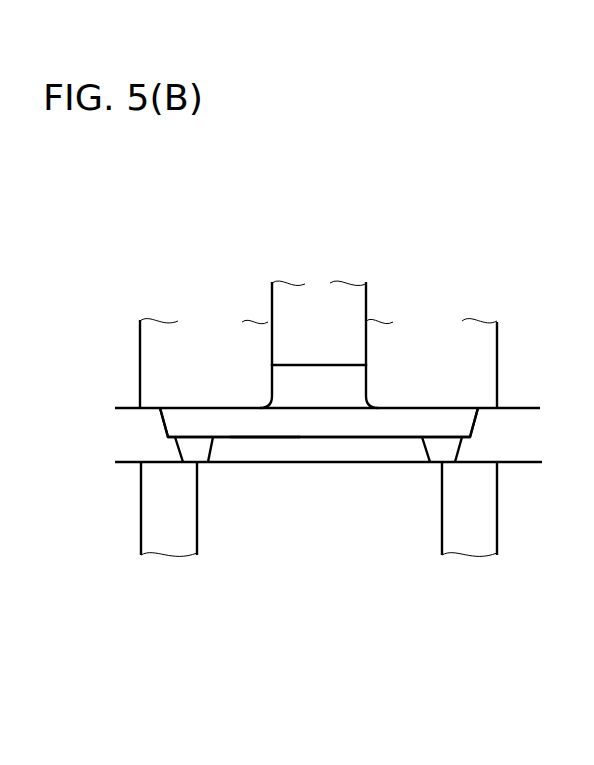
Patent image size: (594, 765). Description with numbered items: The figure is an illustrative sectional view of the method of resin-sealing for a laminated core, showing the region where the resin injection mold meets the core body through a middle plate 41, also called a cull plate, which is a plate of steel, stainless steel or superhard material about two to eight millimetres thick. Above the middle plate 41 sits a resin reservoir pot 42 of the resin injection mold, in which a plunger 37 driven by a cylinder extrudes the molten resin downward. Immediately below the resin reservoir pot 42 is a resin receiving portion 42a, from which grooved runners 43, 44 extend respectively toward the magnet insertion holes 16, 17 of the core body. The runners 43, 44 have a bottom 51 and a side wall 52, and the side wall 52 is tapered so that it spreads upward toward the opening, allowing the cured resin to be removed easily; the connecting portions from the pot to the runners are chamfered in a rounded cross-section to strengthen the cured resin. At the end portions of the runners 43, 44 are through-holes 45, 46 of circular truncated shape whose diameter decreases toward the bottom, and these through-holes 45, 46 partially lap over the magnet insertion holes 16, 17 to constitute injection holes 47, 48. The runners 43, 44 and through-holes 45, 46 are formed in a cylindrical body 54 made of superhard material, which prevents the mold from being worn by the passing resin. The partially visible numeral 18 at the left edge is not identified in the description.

The magnet insertion hole 16 is at (153, 512).
The magnet insertion hole 17 is at (477, 512).
The connecting portion 18 is at (2, 376).
The plunger 37 is at (342, 312).
The middle plate 41 is at (508, 432).
The resin reservoir pot 42 is at (343, 390).
The resin receiving portion 42a is at (316, 423).
The runner 43 is at (228, 423).
The runner 44 is at (450, 422).
The through-hole 45 is at (195, 450).
The through-hole 46 is at (442, 447).
The injection hole 47 is at (188, 465).
The injection hole 48 is at (447, 464).
The bottom 51 is at (253, 436).
The side wall 52 is at (167, 423).
The cylindrical body 54 is at (140, 388).